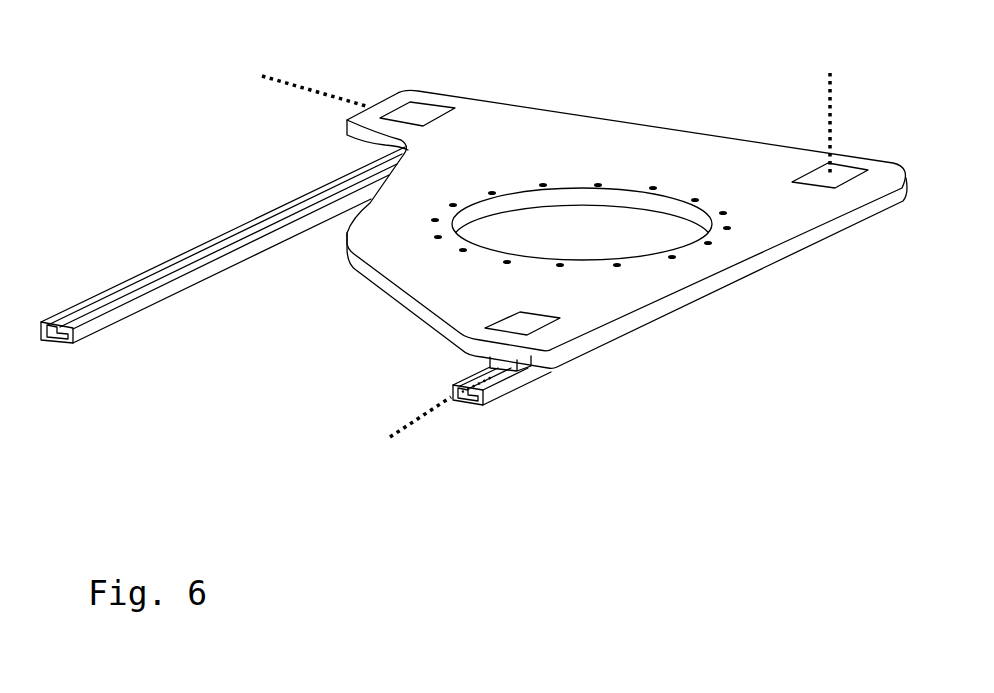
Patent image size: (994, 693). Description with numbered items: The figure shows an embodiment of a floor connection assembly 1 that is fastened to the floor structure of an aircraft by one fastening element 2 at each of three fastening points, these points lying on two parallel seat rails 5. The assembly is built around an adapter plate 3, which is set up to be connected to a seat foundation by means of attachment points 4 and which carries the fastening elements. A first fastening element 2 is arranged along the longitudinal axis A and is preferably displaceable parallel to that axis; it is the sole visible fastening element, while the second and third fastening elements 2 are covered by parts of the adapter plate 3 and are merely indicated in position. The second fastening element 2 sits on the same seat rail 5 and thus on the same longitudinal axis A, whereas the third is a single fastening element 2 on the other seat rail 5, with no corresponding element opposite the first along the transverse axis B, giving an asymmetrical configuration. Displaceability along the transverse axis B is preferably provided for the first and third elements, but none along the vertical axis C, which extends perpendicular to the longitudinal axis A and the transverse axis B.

The floor connection assembly 1 is at (787, 330).
The fastening element 2 is at (396, 83).
The adapter plate 3 is at (605, 293).
The attachment points 4 is at (672, 258).
The seat rail 5 is at (258, 228).
The longitudinal axis A is at (405, 429).
The transverse axis B is at (337, 97).
The vertical axis C is at (827, 106).